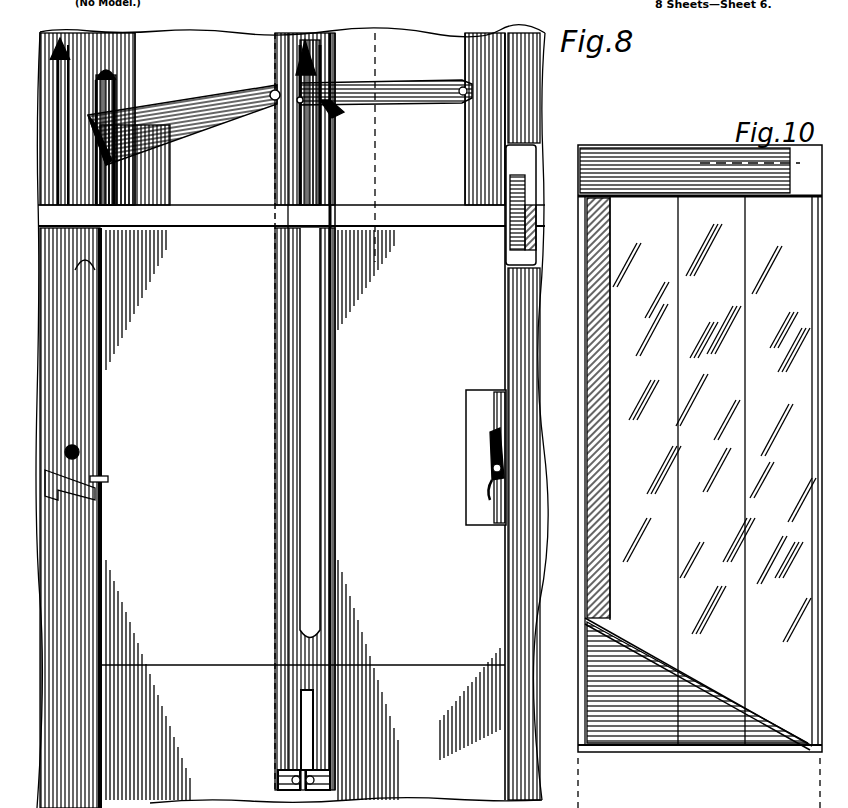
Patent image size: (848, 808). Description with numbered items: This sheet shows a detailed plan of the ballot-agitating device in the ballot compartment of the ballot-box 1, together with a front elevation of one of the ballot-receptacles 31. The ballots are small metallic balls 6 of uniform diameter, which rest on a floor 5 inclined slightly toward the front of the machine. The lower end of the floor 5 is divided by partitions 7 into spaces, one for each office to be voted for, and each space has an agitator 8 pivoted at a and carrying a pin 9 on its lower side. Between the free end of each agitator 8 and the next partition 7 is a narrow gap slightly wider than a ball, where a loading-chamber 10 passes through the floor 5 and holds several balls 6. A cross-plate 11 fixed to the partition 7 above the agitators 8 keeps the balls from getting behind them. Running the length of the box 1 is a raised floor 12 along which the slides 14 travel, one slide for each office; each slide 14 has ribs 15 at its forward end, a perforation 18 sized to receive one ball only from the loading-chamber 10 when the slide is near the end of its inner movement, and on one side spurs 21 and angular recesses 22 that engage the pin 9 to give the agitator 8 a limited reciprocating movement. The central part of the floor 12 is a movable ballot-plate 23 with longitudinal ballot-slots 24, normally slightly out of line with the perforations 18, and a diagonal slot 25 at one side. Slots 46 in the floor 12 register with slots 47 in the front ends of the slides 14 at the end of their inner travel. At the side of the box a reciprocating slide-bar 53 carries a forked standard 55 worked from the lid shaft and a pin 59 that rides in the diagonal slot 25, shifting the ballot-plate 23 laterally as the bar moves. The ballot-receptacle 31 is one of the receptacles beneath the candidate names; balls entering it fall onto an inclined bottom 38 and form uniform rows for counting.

In FIG. 8, the ballot-box 1 is at (512, 783).
In FIG. 8, the floor 5 is at (147, 53).
In FIG. 8, the metallic balls 6 is at (312, 94).
In FIG. 8, the partitions 7 is at (92, 40).
In FIG. 8, the agitator 8 is at (188, 102).
In FIG. 8, the pin 9 is at (108, 160).
In FIG. 8, the loading-chamber 10 is at (82, 110).
In FIG. 8, the cross-plate 11 is at (448, 215).
In FIG. 8, the raised floor 12 is at (376, 416).
In FIG. 8, the slides 14 is at (278, 648).
In FIG. 8, the ribs 15 is at (332, 780).
In FIG. 8, the perforation 18 is at (296, 104).
In FIG. 8, the spurs 21 is at (108, 482).
In FIG. 8, the angular recesses 22 is at (96, 468).
In FIG. 8, the ballot-plate 23 is at (463, 650).
In FIG. 8, the ballot-slots 24 is at (300, 512).
In FIG. 8, the diagonal slot 25 is at (497, 437).
In FIG. 10, the ballot-receptacle 31 is at (636, 136).
In FIG. 10, the inclined bottom 38 is at (755, 708).
In FIG. 8, the slots 46 is at (292, 770).
In FIG. 8, the slots 47 is at (302, 728).
In FIG. 8, the slide-bar 53 is at (486, 486).
In FIG. 8, the forked standard 55 is at (506, 252).
In FIG. 8, the pin 59 is at (493, 468).
In FIG. 8, the pivot a is at (270, 90).